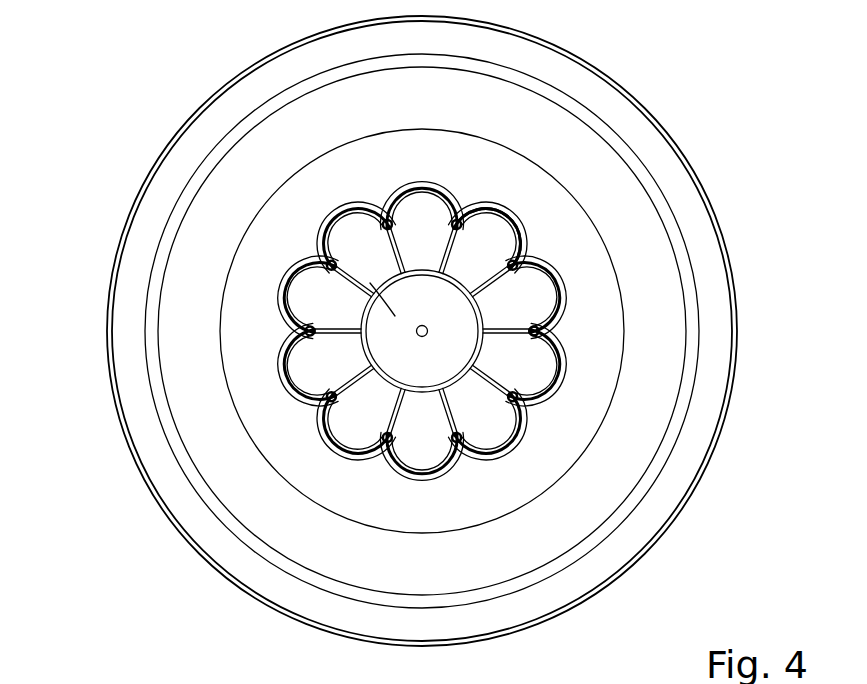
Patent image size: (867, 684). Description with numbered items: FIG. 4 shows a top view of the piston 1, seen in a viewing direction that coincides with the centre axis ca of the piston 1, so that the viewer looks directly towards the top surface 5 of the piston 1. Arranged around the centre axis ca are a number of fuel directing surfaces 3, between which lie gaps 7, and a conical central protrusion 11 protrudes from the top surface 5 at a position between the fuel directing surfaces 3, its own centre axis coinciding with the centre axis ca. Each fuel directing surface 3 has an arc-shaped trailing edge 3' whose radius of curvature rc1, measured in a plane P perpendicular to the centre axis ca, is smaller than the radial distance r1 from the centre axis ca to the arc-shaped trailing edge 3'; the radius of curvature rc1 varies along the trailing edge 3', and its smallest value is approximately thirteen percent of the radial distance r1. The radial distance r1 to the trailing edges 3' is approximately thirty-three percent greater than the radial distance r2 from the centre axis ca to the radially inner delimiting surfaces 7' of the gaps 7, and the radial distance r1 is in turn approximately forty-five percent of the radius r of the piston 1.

The piston 1 is at (185, 70).
The plane P is at (56, 240).
The fuel directing surfaces 3 is at (446, 307).
The arc-shaped trailing edge 3' is at (499, 221).
The top surface 5 is at (543, 420).
The gaps 7 is at (461, 331).
The radially inner delimiting surfaces 7' is at (570, 314).
The central protrusion 11 is at (327, 270).
The radial distance r1 is at (443, 292).
The radial distance r2 is at (535, 329).
The radius of curvature rc1 is at (422, 331).
The radius r is at (422, 331).
The centre axis ca is at (422, 331).